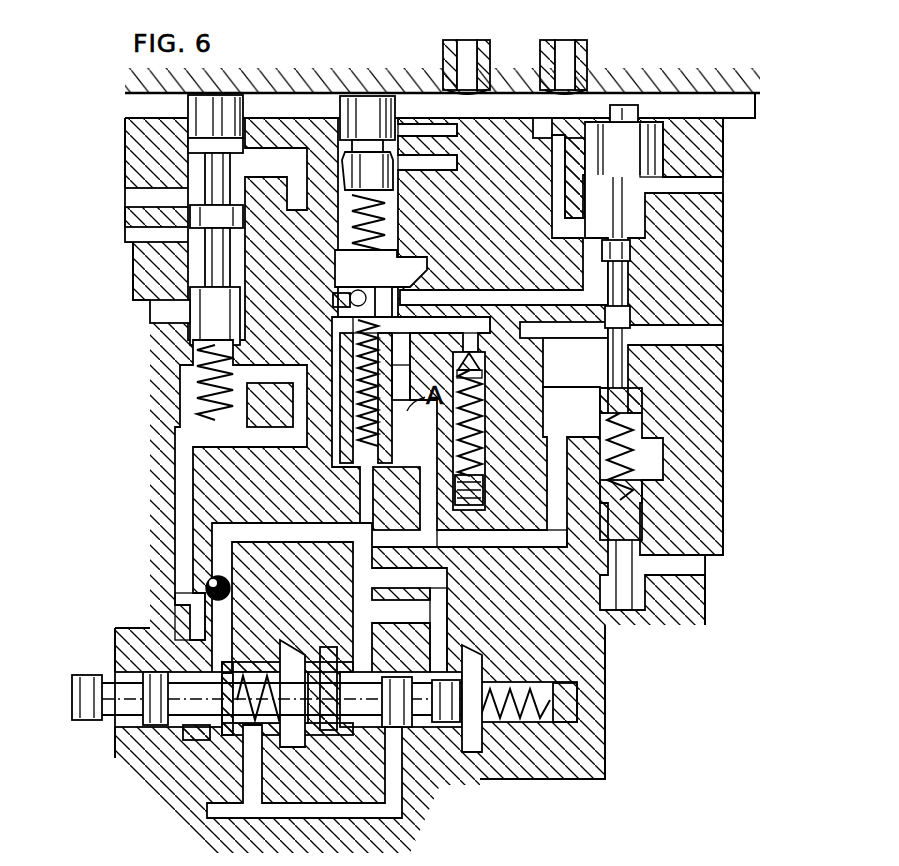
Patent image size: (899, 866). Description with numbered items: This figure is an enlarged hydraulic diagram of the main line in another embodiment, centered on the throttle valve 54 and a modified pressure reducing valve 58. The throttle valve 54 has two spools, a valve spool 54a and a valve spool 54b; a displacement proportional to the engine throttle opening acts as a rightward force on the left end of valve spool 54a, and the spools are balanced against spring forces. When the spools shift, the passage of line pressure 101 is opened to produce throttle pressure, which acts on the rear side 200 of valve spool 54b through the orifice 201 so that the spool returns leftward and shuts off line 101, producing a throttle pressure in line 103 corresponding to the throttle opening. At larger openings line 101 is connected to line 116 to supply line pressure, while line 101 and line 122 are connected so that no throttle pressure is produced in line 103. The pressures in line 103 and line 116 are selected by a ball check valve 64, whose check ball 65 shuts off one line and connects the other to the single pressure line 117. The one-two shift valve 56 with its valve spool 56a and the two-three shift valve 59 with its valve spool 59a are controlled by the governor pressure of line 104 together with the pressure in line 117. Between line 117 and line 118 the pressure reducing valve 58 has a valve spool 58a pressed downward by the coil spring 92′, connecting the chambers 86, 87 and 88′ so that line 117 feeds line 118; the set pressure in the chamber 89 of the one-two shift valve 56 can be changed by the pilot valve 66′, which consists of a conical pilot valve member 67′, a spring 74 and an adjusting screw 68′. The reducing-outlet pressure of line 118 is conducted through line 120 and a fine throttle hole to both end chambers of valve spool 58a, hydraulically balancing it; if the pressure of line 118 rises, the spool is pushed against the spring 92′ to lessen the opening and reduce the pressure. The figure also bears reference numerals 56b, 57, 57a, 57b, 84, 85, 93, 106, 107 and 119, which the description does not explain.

The throttle valve 54 is at (62, 706).
The valve spool 54a is at (150, 672).
The valve spool 54b is at (300, 652).
The one-two shift valve 56 is at (629, 104).
The valve spool 56a is at (655, 152).
The plunger plug 56b is at (645, 532).
The valve plunger 57 is at (368, 98).
The passage 57a is at (428, 150).
The passage 57b is at (472, 165).
The pressure reducing valve 58 is at (306, 344).
The valve spool 58a is at (340, 350).
The two-three shift valve 59 is at (215, 96).
The valve spool 59a is at (200, 330).
The ball check valve 64 is at (233, 568).
The check ball 65 is at (231, 595).
The pilot valve 66′ is at (484, 374).
The conical pilot valve member 67′ is at (474, 360).
The adjusting screw 68′ is at (484, 492).
The spring 74 is at (484, 414).
The spring housing 84 is at (252, 662).
The housing lip 85 is at (216, 737).
The chamber 86 is at (408, 387).
The chamber 87 is at (338, 458).
The chamber 88′ is at (350, 460).
The chamber 89 is at (645, 472).
The coil spring 92′ is at (398, 352).
The spring 93 is at (640, 470).
The line 101 is at (250, 818).
The line 103 is at (447, 576).
The line 104 is at (728, 110).
The passage 106 is at (172, 245).
The passage 107 is at (160, 200).
The line 116 is at (207, 630).
The pressure line 117 is at (300, 392).
The line 118 is at (508, 538).
The passage 119 is at (453, 322).
The line 120 is at (398, 500).
The line 122 is at (358, 614).
The rear side 200 is at (413, 727).
The orifice 201 is at (445, 640).